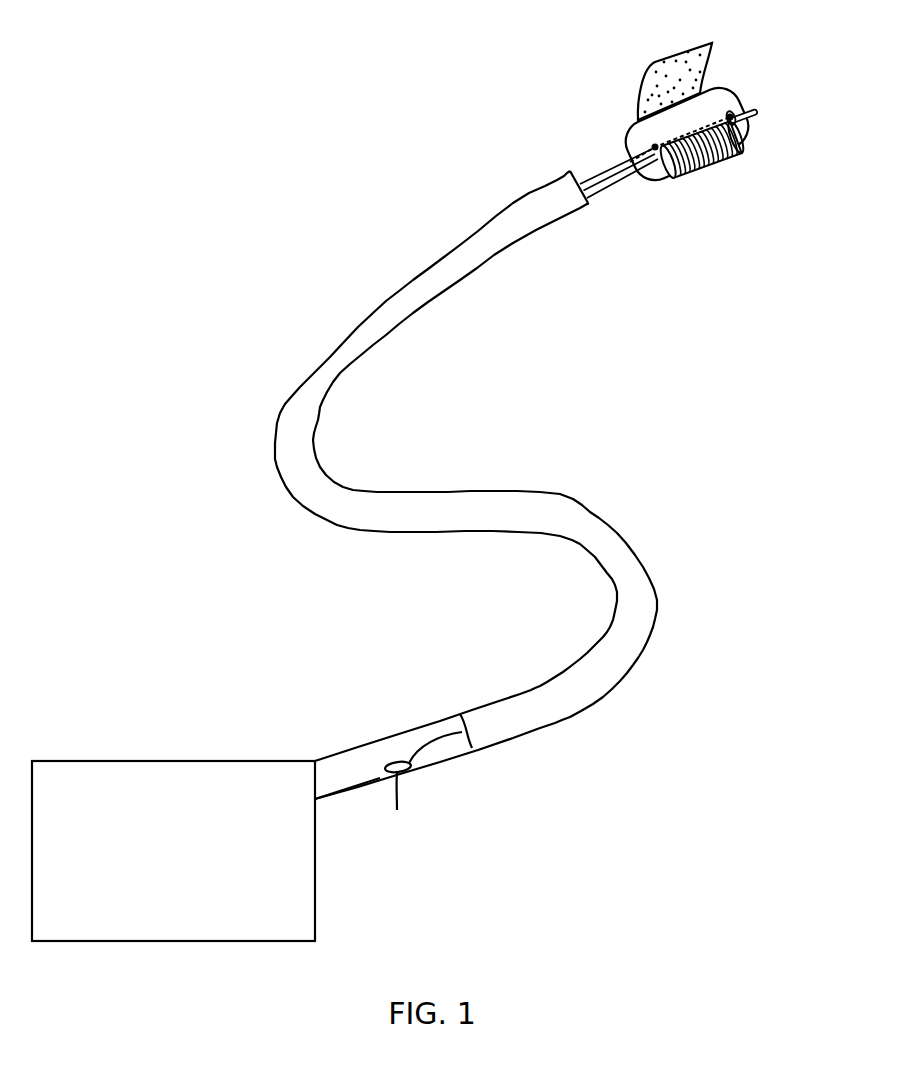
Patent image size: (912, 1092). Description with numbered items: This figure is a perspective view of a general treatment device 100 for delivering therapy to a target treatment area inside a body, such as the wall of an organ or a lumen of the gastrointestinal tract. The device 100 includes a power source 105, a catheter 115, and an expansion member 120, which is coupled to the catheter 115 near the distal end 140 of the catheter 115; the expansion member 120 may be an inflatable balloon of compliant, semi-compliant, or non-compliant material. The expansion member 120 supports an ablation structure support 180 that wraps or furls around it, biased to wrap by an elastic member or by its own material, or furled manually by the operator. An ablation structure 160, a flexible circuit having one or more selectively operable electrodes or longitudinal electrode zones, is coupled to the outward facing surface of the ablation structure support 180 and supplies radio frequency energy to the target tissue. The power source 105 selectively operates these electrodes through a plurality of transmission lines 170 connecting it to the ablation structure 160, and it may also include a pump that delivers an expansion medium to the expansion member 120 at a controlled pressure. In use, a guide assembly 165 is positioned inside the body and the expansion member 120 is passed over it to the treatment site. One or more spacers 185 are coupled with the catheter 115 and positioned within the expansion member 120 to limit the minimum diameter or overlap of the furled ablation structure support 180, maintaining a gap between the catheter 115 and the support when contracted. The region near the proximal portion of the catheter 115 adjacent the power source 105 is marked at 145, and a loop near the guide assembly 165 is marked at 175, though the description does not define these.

The device 100 is at (238, 74).
The power source 105 is at (142, 941).
The catheter 115 is at (617, 522).
The expansion member 120 is at (630, 133).
The distal end 140 is at (757, 112).
The proximal end of catheter 145 is at (332, 798).
The ablation structure 160 is at (722, 165).
The guide assembly 165 is at (462, 747).
The transmission lines 170 is at (612, 192).
The loop / strain relief 175 is at (414, 768).
The ablation structure support 180 is at (663, 62).
The spacers 185 is at (743, 148).